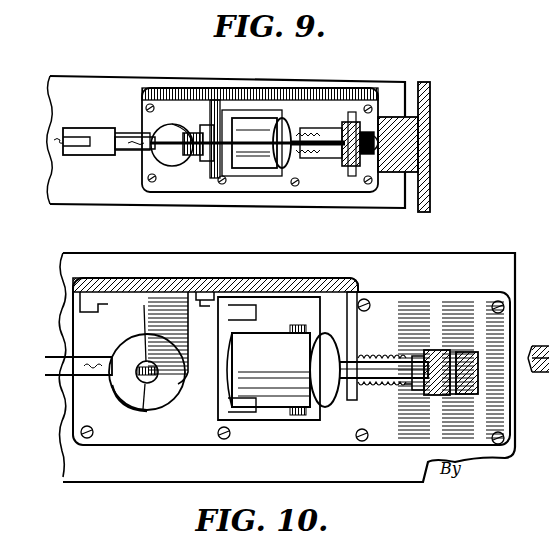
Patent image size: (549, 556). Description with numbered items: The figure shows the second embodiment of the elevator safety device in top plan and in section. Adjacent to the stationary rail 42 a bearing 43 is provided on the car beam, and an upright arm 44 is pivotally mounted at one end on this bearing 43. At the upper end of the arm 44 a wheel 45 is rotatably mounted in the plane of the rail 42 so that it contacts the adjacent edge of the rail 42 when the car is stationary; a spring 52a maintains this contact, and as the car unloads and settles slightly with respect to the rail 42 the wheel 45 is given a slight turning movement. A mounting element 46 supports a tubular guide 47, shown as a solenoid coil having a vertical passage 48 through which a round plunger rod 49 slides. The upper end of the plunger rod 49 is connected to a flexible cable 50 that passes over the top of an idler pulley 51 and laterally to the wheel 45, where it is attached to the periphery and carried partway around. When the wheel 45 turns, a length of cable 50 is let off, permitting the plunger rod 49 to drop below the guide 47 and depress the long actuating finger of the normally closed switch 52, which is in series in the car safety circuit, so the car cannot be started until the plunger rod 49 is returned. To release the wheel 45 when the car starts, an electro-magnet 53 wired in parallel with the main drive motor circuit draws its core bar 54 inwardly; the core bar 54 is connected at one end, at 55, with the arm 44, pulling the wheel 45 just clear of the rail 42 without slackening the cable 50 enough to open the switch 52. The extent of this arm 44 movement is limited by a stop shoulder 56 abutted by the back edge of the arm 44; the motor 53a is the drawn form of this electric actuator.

In FIG. 9, the rail 42 is at (431, 130).
In FIG. 10, the bearing 43 is at (474, 355).
In FIG. 9, the upright arm 44 is at (346, 122).
In FIG. 10, the upright arm 44 is at (482, 388).
In FIG. 9, the wheel 45 is at (368, 130).
In FIG. 9, the mounting element 46 is at (183, 96).
In FIG. 10, the mounting element 46 is at (163, 283).
In FIG. 9, the tubular guide 47 is at (166, 150).
In FIG. 10, the tubular guide 47 is at (132, 386).
In FIG. 9, the vertical passage 48 is at (177, 138).
In FIG. 10, the vertical passage 48 is at (144, 300).
In FIG. 9, the plunger rod 49 is at (186, 158).
In FIG. 10, the plunger rod 49 is at (147, 410).
In FIG. 9, the flexible cable 50 is at (211, 162).
In FIG. 10, the flexible cable 50 is at (150, 376).
In FIG. 9, the idler pulley 51 is at (192, 188).
In FIG. 9, the switch 52 is at (84, 132).
In FIG. 9, the spring 52a is at (322, 156).
In FIG. 10, the spring 52a is at (380, 355).
In FIG. 9, the electro-magnet 53 is at (127, 134).
In FIG. 10, the electro-magnet 53 is at (44, 357).
In FIG. 9, the motor 53a is at (260, 166).
In FIG. 10, the motor 53a is at (280, 404).
In FIG. 9, the core bar 54 is at (324, 118).
In FIG. 10, the core bar 54 is at (383, 378).
In FIG. 10, the connection 55 is at (436, 350).
In FIG. 10, the stop shoulder 56 is at (422, 390).